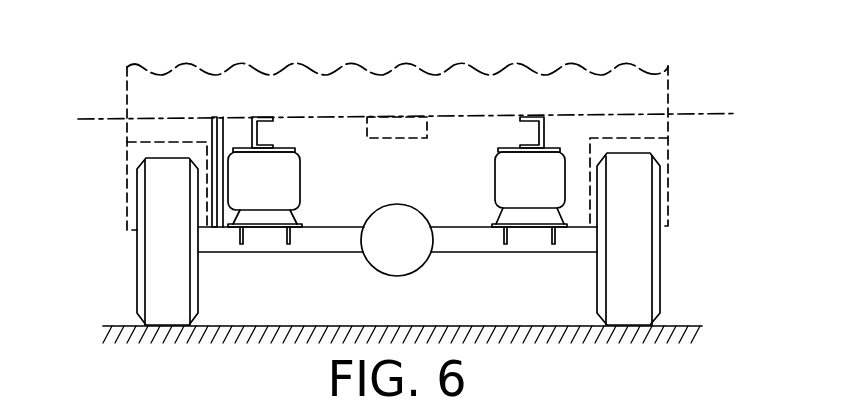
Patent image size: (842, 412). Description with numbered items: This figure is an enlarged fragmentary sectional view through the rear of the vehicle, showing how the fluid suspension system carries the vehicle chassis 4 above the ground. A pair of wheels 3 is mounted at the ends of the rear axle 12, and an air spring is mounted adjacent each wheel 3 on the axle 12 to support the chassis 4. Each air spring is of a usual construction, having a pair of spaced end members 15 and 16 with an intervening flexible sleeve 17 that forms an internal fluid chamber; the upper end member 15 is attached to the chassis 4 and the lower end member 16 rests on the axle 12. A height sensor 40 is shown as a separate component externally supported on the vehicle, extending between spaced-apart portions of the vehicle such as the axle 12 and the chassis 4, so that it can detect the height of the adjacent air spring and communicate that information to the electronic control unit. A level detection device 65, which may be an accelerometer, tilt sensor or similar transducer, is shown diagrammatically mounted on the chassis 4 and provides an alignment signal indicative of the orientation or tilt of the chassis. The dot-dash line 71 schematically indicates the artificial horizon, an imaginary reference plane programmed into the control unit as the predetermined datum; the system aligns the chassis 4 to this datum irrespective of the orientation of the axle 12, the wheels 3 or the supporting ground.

The wheel 3 is at (157, 276).
The vehicle chassis 4 is at (126, 70).
The rear axle 12 is at (460, 237).
The end member 15 is at (293, 150).
The end member 16 is at (265, 215).
The flexible sleeve 17 is at (291, 181).
The height sensor 40 is at (218, 122).
The level detection device 65 is at (398, 127).
The artificial horizon line 71 is at (723, 113).